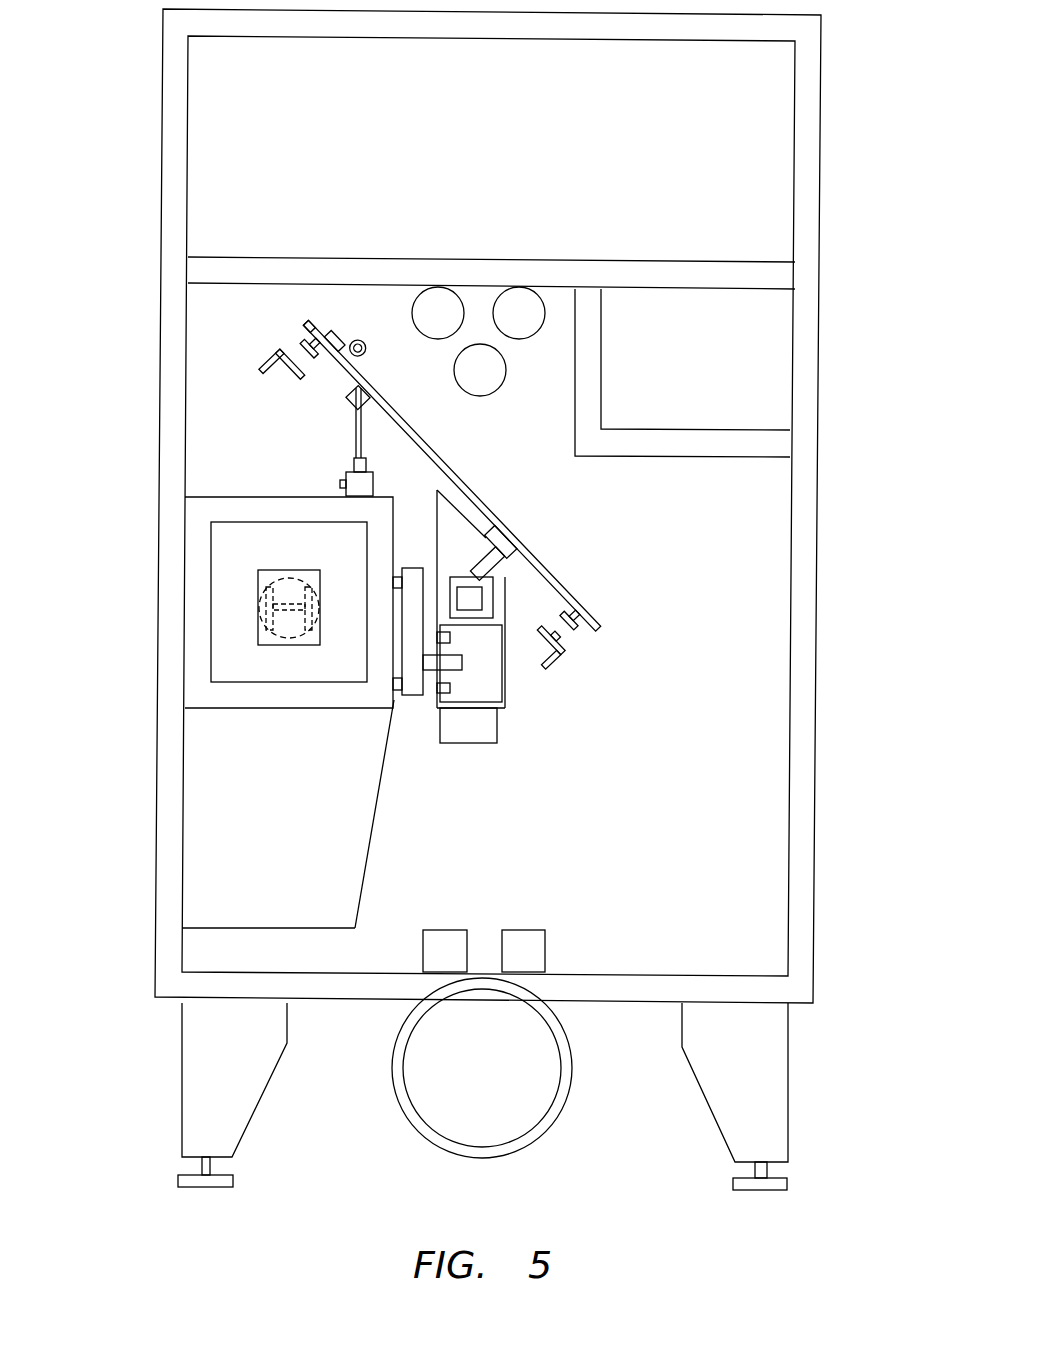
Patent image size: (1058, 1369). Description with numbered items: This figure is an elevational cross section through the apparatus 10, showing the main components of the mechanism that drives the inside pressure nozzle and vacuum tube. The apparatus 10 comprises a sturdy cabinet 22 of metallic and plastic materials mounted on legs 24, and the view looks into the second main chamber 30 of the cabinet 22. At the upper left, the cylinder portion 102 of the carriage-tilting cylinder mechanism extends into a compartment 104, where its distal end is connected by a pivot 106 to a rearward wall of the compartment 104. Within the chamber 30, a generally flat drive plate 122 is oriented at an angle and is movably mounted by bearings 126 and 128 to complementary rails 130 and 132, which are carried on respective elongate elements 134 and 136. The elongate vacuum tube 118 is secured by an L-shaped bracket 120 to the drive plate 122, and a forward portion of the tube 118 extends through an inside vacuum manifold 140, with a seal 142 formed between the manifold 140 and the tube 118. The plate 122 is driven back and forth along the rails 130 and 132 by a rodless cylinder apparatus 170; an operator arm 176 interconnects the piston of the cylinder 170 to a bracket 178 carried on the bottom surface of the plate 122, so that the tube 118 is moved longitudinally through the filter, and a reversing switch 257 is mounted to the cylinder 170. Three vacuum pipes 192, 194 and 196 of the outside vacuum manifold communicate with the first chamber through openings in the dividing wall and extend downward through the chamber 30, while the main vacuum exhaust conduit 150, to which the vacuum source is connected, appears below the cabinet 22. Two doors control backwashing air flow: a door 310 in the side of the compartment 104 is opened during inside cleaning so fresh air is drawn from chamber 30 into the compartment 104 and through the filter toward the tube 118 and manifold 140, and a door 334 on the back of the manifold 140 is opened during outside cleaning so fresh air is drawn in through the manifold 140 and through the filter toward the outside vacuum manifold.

The apparatus 10 is at (125, 597).
The cabinet 22 is at (155, 835).
The legs 24 is at (195, 1087).
The second main chamber 30 is at (768, 643).
The cylinder portion 102 is at (265, 630).
The compartment 104 is at (203, 496).
The pivot 106 is at (292, 585).
The vacuum tube 118 is at (483, 598).
The L-shaped bracket 120 is at (517, 532).
The drive plate 122 is at (468, 478).
The bearing 126 is at (303, 337).
The bearing 128 is at (585, 628).
The rail 130 is at (297, 347).
The rail 132 is at (563, 642).
The elongate element 134 is at (258, 368).
The elongate element 136 is at (552, 668).
The inside vacuum manifold 140 is at (503, 688).
The seal 142 is at (452, 578).
The main vacuum exhaust conduit 150 is at (478, 1160).
The rodless cylinder apparatus 170 is at (346, 474).
The operator arm 176 is at (355, 427).
The bracket 178 is at (370, 392).
The vacuum pipe 192 is at (520, 288).
The vacuum pipe 194 is at (480, 396).
The vacuum pipe 196 is at (438, 287).
The reversing switch 257 is at (340, 484).
The door 310 is at (413, 695).
The door 334 is at (470, 693).